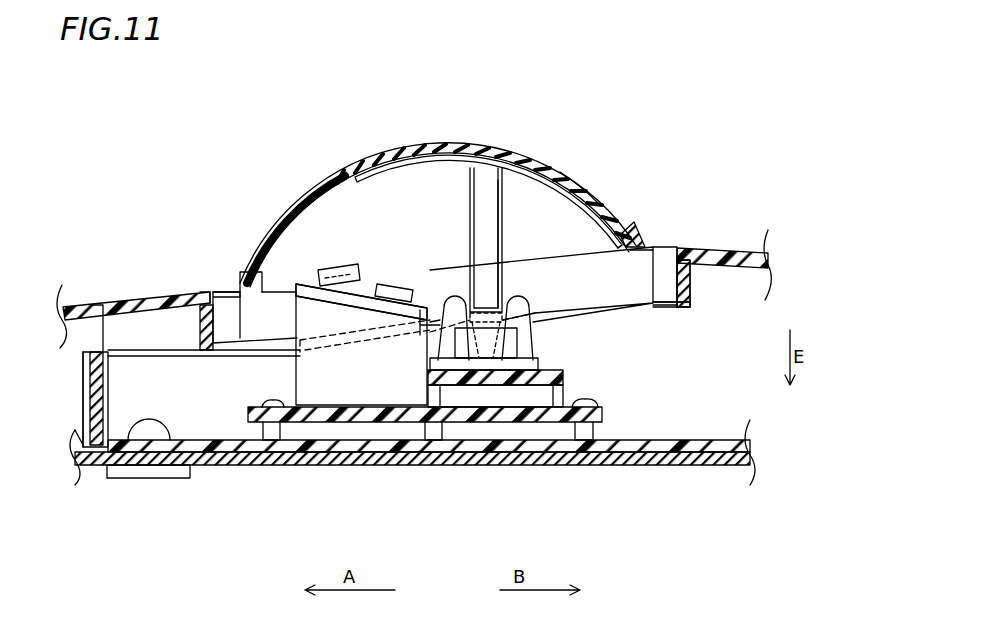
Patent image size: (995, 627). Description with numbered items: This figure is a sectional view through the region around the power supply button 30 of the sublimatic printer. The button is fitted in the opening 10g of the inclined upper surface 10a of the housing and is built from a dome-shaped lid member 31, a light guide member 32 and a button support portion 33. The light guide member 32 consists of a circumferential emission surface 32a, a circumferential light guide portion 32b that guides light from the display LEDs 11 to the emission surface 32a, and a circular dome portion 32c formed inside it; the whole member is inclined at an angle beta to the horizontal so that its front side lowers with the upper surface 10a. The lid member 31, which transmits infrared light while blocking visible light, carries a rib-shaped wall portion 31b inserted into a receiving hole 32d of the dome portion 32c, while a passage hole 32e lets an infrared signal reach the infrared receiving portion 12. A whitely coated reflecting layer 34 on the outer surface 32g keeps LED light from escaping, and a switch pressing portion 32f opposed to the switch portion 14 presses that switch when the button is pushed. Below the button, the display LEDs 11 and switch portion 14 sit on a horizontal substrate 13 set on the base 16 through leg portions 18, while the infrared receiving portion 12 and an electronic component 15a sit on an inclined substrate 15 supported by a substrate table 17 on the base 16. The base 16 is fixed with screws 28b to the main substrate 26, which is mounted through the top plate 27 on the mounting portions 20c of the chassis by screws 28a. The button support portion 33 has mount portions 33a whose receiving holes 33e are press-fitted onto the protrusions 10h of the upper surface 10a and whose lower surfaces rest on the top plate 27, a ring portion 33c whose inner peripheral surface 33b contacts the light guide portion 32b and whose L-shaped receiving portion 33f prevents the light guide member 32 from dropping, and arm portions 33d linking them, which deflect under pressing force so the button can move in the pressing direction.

The power supply button 30 is at (666, 97).
The light guide member 32 is at (425, 160).
The dome portion 32c is at (400, 180).
The outer surface 32g is at (592, 200).
The lid member 31 is at (252, 280).
The wall portion 31b is at (634, 236).
The passage hole 32e is at (243, 285).
The reflecting layer 34 is at (486, 215).
The switch portion 14 is at (473, 310).
The switch pressing portion 32f is at (494, 216).
The display LEDs 11 is at (453, 298).
The light guide portion 32b is at (655, 302).
The emission surface 32a is at (665, 262).
The receiving hole 32d is at (616, 232).
The substrate 15 is at (303, 283).
The electronic component 15a is at (355, 278).
The infrared receiving portion 12 is at (333, 290).
The angle beta is at (640, 318).
The substrate 13 is at (478, 388).
The base 16 is at (497, 407).
The substrate table 17 is at (367, 407).
The leg portions 18 is at (428, 425).
The screws 28b is at (305, 410).
The screws 28a is at (145, 420).
The top plate 27 is at (672, 455).
The main substrate 26 is at (735, 458).
The mounting portions 20c is at (150, 478).
The button support portion 33 is at (692, 270).
The ring portion 33c is at (692, 288).
The receiving portion 33f is at (674, 310).
The receiving holes 33e is at (90, 380).
The arm portions 33d is at (143, 350).
The inner peripheral surface 33b is at (208, 340).
The mount portions 33a is at (86, 430).
The protrusions 10h is at (95, 332).
The opening 10g is at (213, 287).
The upper surface 10a is at (726, 255).